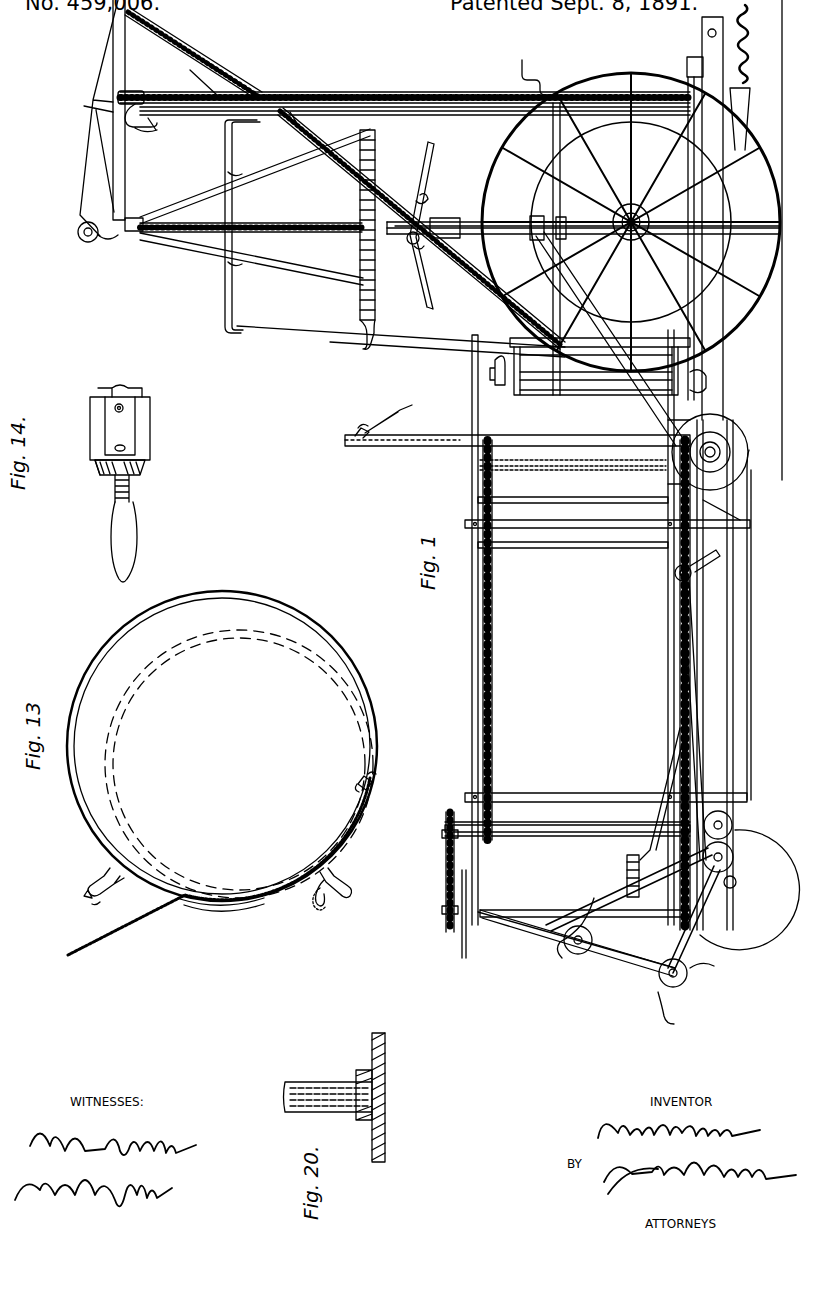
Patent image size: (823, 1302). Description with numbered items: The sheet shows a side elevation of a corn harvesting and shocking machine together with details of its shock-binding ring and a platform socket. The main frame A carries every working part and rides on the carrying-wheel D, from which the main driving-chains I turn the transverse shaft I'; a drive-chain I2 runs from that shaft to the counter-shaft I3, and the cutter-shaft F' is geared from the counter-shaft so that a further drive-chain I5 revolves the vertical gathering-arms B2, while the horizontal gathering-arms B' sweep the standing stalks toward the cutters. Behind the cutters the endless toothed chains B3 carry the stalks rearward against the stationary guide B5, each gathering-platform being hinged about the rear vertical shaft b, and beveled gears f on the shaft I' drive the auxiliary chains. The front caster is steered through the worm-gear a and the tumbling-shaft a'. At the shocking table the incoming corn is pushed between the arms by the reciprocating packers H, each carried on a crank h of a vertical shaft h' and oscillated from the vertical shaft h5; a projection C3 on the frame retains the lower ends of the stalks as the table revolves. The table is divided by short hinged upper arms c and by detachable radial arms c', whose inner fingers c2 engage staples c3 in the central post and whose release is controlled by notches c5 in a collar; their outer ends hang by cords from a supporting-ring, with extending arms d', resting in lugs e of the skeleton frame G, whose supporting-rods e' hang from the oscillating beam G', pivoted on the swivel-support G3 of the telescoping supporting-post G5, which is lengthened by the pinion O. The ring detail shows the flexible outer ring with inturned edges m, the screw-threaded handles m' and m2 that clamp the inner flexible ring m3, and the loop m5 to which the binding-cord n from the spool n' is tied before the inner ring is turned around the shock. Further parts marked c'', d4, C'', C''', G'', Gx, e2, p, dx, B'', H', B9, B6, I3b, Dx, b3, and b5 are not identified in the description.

In FIG. 1, the carrying-wheel D is at (465, 218).
In FIG. 1, the detachable radial projecting arm c' is at (583, 205).
In FIG. 20, the detachable radial projecting arm c' is at (328, 1075).
In FIG. 1, the skeleton frame G is at (405, 55).
In FIG. 1, the two-part supporting-post G5 is at (290, 100).
In FIG. 1, the diagonal brace c'' is at (401, 208).
In FIG. 1, the link d4 is at (197, 72).
In FIG. 1, the swivel-support G3 is at (142, 96).
In FIG. 1, the tongue frame C'' is at (102, 137).
In FIG. 1, the pulley C''' is at (81, 240).
In FIG. 1, the oscillating beam G' is at (207, 176).
In FIG. 1, the rod / ring G'' is at (243, 209).
In FIG. 13, the rod / ring G'' is at (222, 730).
In FIG. 1, the ratchet bar Gx is at (368, 212).
In FIG. 1, the supporting-rod e' is at (251, 231).
In FIG. 1, the extending arm d' is at (228, 226).
In FIG. 1, the projecting lug e is at (240, 217).
In FIG. 1, the pivot e2 is at (284, 125).
In FIG. 1, the pivot p is at (153, 136).
In FIG. 1, the foot dx is at (228, 332).
In FIG. 1, the upwardly-projecting finger c2 is at (364, 342).
In FIG. 1, the stationary projecting arm c is at (416, 224).
In FIG. 20, the stationary projecting arm c is at (385, 1097).
In FIG. 1, the loop or staple c3 is at (428, 189).
In FIG. 1, the opening or notch c5 is at (430, 253).
In FIG. 1, the pinion O is at (522, 58).
In FIG. 1, the projection C3 is at (686, 62).
In FIG. 1, the main frame A is at (728, 640).
In FIG. 1, the counter-shaft I3 is at (755, 38).
In FIG. 1, the main driving-chain I is at (640, 339).
In FIG. 1, the frame post B'' is at (560, 627).
In FIG. 1, the crank h is at (590, 382).
In FIG. 1, the reciprocating packer H is at (493, 399).
In FIG. 1, the vertical shaft h' is at (550, 402).
In FIG. 1, the vertical shaft h5 is at (560, 370).
In FIG. 1, the bracket H' is at (708, 386).
In FIG. 1, the spool n' is at (517, 425).
In FIG. 1, the binding-cord n is at (388, 411).
In FIG. 13, the binding-cord n is at (219, 866).
In FIG. 1, the revolving gathering-arm B' is at (597, 732).
In FIG. 1, the beveled gear f is at (550, 456).
In FIG. 1, the vertical shaft b is at (576, 548).
In FIG. 1, the endless toothed chain B3 is at (492, 650).
In FIG. 1, the stationary guide B5 is at (470, 670).
In FIG. 1, the chain B9 is at (676, 672).
In FIG. 1, the rail B6 is at (668, 622).
In FIG. 1, the transverse shaft I' is at (714, 448).
In FIG. 1, the drive-chain I2 is at (750, 545).
In FIG. 1, the cutter-shaft F' is at (737, 838).
In FIG. 1, the pulley I3b is at (730, 820).
In FIG. 1, the wheel Dx is at (749, 890).
In FIG. 1, the drive-chain I5 is at (625, 896).
In FIG. 1, the worm-gear a is at (625, 868).
In FIG. 1, the tumbling-shaft a' is at (660, 794).
In FIG. 1, the shaft b3 is at (443, 826).
In FIG. 1, the sprocket chain b5 is at (446, 864).
In FIG. 1, the revolving gathering-arm B2 is at (574, 966).
In FIG. 13, the projecting loop m5 is at (360, 780).
In FIG. 13, the screw-threaded handle m' is at (100, 886).
In FIG. 14, the screw-threaded handle m' is at (86, 528).
In FIG. 13, the screw-threaded handle m2 is at (342, 897).
In FIG. 13, the movable flexible open auxiliary ring m3 is at (242, 910).
In FIG. 14, the movable flexible open auxiliary ring m3 is at (106, 392).
In FIG. 14, the inturned edge m is at (113, 427).